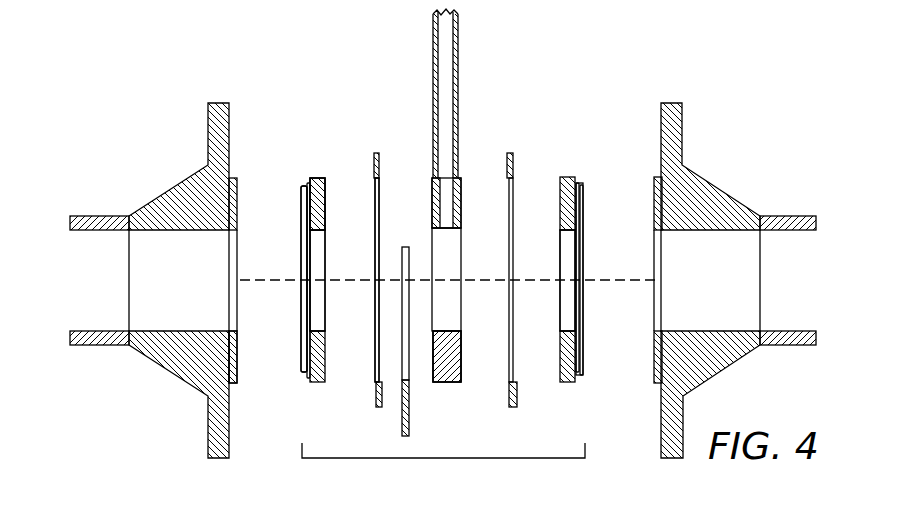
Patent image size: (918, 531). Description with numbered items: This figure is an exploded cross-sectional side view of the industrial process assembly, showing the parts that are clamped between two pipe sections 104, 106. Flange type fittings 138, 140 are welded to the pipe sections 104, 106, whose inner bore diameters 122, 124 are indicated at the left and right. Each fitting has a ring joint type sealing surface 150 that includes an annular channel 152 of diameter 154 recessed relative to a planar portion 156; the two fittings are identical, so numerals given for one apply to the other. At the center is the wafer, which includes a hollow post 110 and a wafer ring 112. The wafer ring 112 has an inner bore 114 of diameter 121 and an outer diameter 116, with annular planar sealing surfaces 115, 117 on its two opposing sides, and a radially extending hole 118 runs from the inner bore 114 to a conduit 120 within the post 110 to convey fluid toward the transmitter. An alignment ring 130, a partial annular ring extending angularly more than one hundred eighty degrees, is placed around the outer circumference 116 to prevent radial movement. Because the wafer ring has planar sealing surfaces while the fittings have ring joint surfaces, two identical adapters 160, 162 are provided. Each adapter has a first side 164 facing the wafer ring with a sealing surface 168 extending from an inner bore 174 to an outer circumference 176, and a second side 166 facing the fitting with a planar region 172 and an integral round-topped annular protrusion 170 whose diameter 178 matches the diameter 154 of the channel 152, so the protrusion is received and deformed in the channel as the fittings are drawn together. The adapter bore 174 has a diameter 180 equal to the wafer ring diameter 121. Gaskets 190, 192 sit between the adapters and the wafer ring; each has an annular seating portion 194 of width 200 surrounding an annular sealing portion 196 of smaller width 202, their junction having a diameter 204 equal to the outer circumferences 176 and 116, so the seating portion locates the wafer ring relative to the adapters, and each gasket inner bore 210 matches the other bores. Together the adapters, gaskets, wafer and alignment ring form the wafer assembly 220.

The pipe section 104 is at (92, 346).
The pipe section 106 is at (800, 346).
The hollow post 110 is at (457, 72).
The wafer ring 112 is at (447, 187).
The inner bore 114 is at (432, 340).
The annular planar sealing surface 115 is at (432, 350).
The outer diameter 116 is at (461, 383).
The annular planar sealing surface 117 is at (461, 356).
The radially extending hole 118 is at (435, 178).
The conduit 120 is at (447, 50).
The diameter 121 is at (467, 330).
The inner bore diameter 122 is at (93, 231).
The inner bore diameter 124 is at (789, 231).
The alignment ring 130 is at (402, 425).
The fitting 138 is at (218, 459).
The fitting 140 is at (662, 440).
The sealing surface 150 is at (238, 204).
The annular channel 152 is at (238, 376).
The diameter 154 is at (647, 369).
The planar portion 156 is at (238, 346).
The adapter 160 is at (318, 384).
The adapter 162 is at (571, 383).
The first side 164 is at (329, 189).
The second side 166 is at (300, 189).
The sealing surface 168 is at (326, 219).
The annular protrusion 170 is at (302, 184).
The planar region 172 is at (306, 372).
The inner bore 174 is at (326, 243).
The outer circumference 176 is at (316, 177).
The diameter 178 is at (590, 369).
The diameter 180 is at (553, 330).
The gasket 190 is at (372, 406).
The gasket 192 is at (515, 408).
The annular seating portion 194 is at (372, 387).
The annular sealing portion 196 is at (376, 340).
The width 200 is at (361, 148).
The width 202 is at (361, 182).
The diameter 204 is at (500, 381).
The inner bore 210 is at (381, 235).
The wafer assembly 220 is at (455, 459).